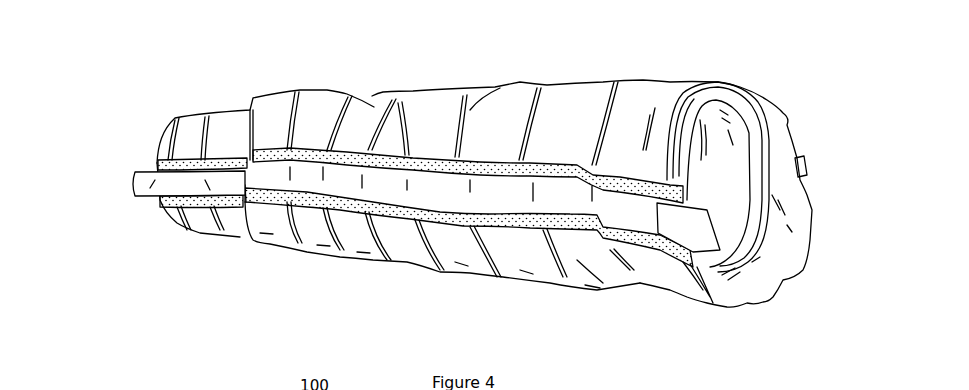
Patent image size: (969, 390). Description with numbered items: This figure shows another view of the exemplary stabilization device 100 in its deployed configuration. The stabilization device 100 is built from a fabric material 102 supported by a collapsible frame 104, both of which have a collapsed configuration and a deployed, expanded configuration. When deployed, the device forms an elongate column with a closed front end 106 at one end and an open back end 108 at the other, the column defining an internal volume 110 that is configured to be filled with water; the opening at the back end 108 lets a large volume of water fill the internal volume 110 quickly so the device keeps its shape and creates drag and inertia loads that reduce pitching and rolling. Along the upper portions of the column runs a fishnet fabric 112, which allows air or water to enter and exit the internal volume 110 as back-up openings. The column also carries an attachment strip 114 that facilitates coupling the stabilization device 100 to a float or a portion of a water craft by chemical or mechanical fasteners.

The stabilization device 100 is at (307, 80).
The fabric material 102 is at (434, 120).
The collapsible frame 104 is at (607, 100).
The front end 106 is at (130, 175).
The back end 108 is at (826, 134).
The internal volume 110 is at (736, 199).
The fishnet fabric 112 is at (552, 158).
The attachment strip 114 is at (400, 193).